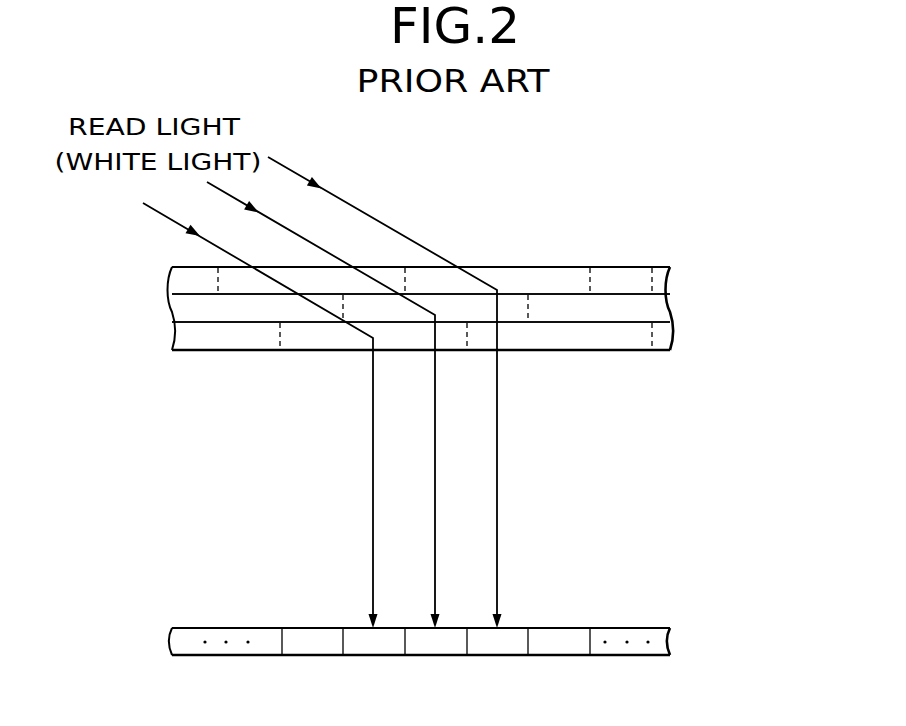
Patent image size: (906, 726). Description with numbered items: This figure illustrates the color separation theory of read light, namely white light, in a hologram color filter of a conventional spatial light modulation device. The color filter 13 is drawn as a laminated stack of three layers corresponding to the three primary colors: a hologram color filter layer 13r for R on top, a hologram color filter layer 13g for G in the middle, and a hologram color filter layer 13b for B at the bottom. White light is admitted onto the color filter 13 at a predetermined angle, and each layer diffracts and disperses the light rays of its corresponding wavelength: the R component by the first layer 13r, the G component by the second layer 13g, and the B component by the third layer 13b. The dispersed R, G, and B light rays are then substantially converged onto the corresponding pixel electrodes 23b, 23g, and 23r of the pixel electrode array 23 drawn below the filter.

The color filter 13 is at (487, 313).
The hologram color filter layer for R 13r is at (670, 283).
The hologram color filter layer for G 13g is at (670, 312).
The hologram color filter layer for B 13b is at (668, 337).
The pixel electrodes 23 is at (455, 661).
The pixel electrode 23b is at (374, 661).
The pixel electrode 23g is at (440, 661).
The pixel electrode 23r is at (502, 661).